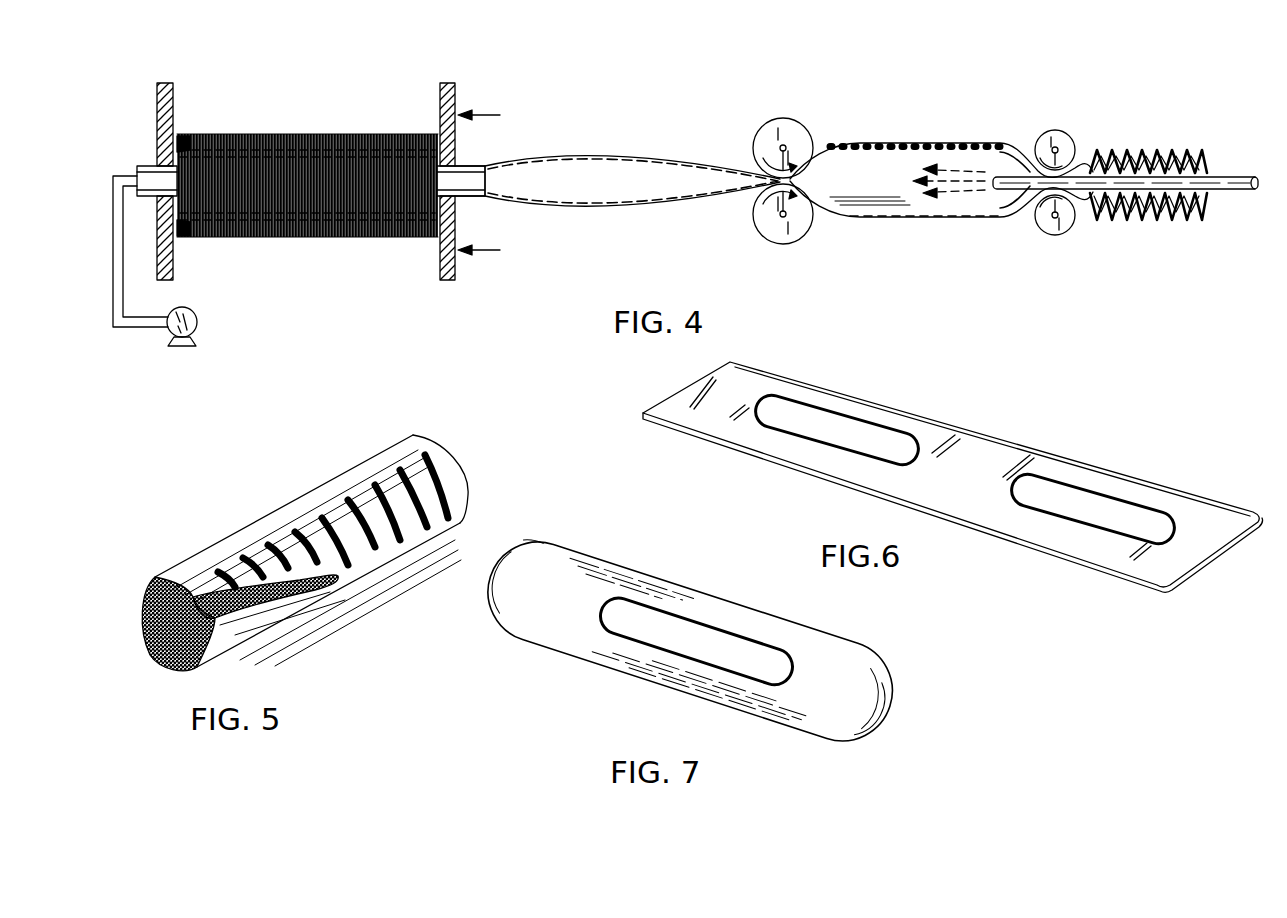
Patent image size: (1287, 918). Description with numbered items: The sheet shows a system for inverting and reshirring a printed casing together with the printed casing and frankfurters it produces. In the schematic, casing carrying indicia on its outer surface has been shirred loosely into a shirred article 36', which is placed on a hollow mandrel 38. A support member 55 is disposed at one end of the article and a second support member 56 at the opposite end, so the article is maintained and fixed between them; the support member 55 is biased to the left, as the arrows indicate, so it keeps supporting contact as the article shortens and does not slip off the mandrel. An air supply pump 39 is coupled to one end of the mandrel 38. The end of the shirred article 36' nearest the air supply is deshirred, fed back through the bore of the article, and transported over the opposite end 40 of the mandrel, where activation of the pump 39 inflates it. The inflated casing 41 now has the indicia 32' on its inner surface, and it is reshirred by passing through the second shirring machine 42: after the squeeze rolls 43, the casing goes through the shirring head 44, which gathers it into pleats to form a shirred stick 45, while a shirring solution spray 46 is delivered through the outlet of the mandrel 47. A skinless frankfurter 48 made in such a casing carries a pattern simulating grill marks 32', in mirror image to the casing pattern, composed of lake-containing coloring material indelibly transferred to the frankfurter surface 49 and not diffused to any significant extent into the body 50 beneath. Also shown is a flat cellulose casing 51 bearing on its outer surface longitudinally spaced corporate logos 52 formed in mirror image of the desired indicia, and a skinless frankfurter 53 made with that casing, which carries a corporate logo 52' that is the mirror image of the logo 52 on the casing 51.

In FIG. 4, the indicia 32' is at (744, 152).
In FIG. 5, the indicia 32' is at (333, 514).
In FIG. 4, the loosely shirred article 36' is at (307, 168).
In FIG. 4, the hollow mandrel 38 is at (148, 163).
In FIG. 4, the air supply pump 39 is at (192, 313).
In FIG. 4, the opposite end of mandrel 40 is at (472, 178).
In FIG. 4, the inflated casing 41 is at (620, 155).
In FIG. 4, the second shirring machine 42 is at (1090, 104).
In FIG. 4, the squeeze rolls 43 is at (787, 242).
In FIG. 4, the shirring head 44 is at (1055, 133).
In FIG. 4, the shirred stick 45 is at (1137, 153).
In FIG. 4, the shirring solution spray 46 is at (953, 192).
In FIG. 4, the mandrel 47 is at (1237, 193).
In FIG. 5, the skinless frankfurter 48 is at (415, 445).
In FIG. 5, the frankfurter surface 49 is at (282, 605).
In FIG. 5, the body of the frankfurter 50 is at (147, 602).
In FIG. 6, the flat cellulose casing 51 is at (952, 423).
In FIG. 6, the corporate logo 52 is at (965, 445).
In FIG. 7, the corporate logo 52' is at (696, 660).
In FIG. 7, the skinless frankfurter 53 is at (548, 652).
In FIG. 4, the support member 55 is at (453, 93).
In FIG. 4, the second support member 56 is at (173, 97).